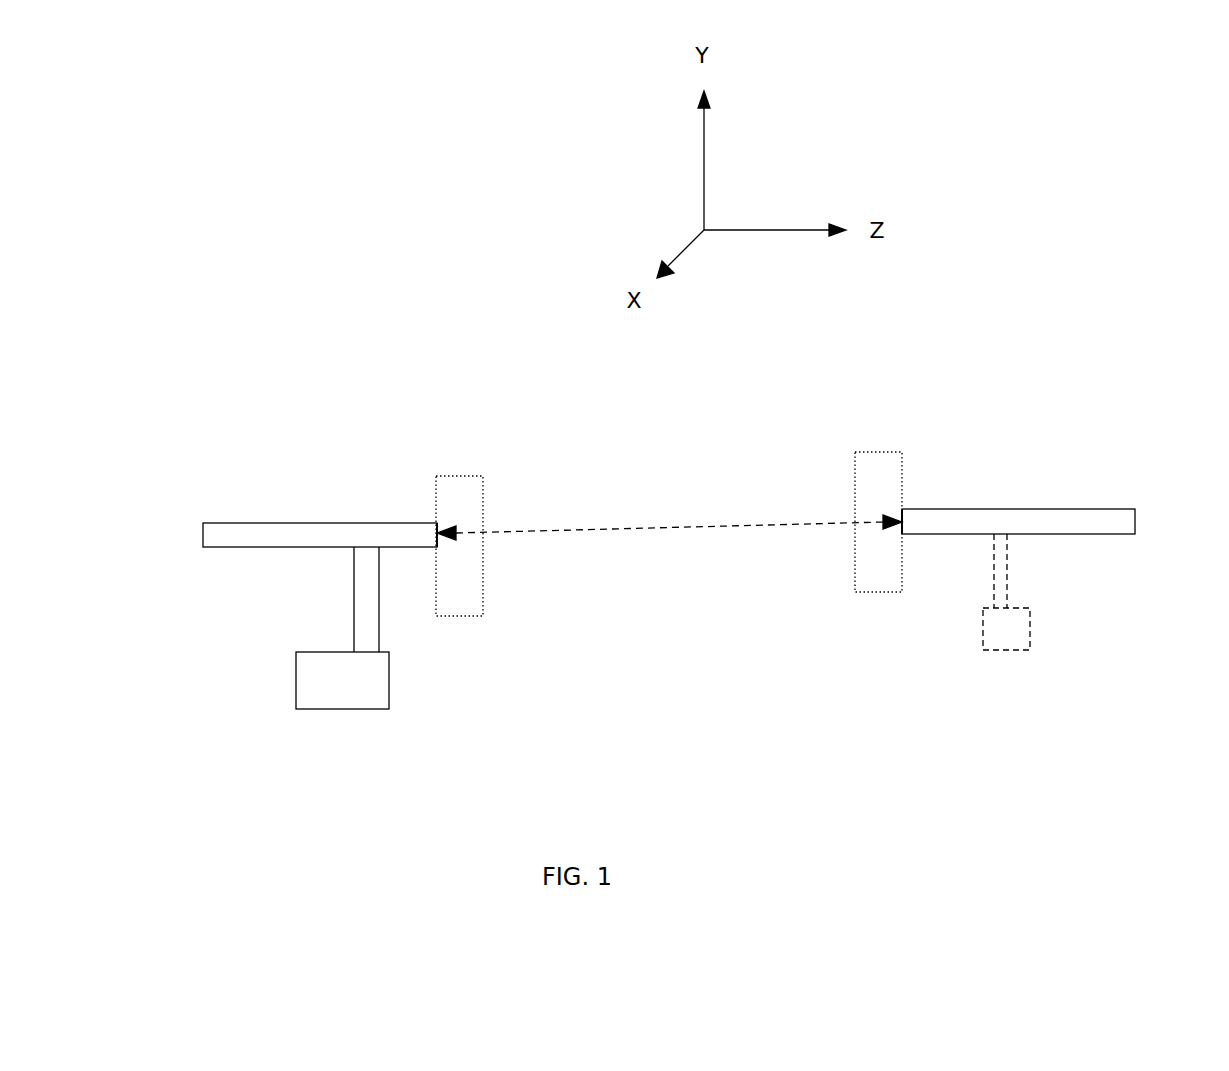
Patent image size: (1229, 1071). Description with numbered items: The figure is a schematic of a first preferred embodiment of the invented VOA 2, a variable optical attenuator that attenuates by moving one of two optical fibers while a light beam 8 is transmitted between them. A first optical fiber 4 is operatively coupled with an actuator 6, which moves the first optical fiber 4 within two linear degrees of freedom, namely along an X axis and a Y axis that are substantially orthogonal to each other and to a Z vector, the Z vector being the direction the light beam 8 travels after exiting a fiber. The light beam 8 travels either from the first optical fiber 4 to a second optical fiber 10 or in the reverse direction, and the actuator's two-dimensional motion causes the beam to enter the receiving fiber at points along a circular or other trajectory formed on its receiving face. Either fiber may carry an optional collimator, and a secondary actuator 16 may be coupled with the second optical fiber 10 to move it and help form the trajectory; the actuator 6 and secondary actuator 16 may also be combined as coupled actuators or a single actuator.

The invented VOA 2 is at (275, 292).
The first optical fiber 4 is at (320, 523).
The actuator 6 is at (297, 675).
The light beam 8 is at (542, 535).
The second optical fiber 10 is at (972, 509).
The secondary actuator 16 is at (1029, 627).